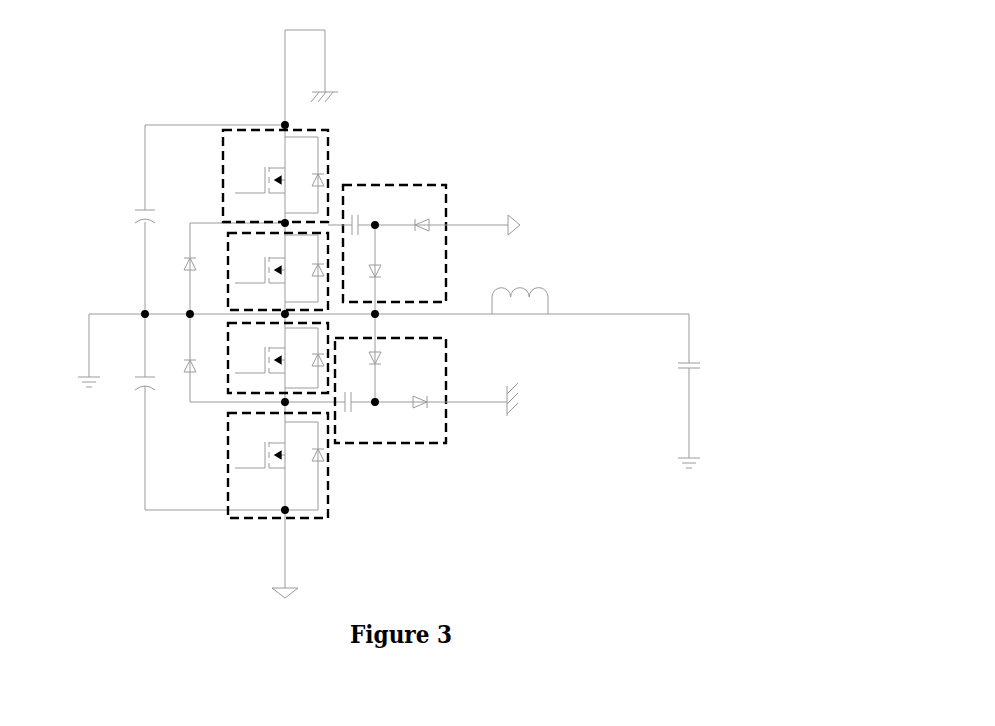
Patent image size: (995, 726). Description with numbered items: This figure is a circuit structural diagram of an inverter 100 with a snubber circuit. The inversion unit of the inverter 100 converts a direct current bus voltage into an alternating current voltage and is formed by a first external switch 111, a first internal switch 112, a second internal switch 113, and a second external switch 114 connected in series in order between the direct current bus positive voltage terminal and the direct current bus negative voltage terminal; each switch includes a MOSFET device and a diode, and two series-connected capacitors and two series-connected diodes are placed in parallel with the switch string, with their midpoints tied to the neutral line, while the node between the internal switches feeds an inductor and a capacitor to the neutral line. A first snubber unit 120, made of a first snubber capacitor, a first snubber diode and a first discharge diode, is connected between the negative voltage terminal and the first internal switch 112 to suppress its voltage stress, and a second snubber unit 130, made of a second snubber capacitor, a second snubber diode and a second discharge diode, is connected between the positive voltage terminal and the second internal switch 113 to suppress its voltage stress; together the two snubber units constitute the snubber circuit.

The inverter 100 is at (696, 57).
The first external switch 111 is at (338, 142).
The first internal switch 112 is at (228, 246).
The second internal switch 113 is at (228, 395).
The second external switch 114 is at (330, 478).
The first snubber unit 120 is at (448, 188).
The second snubber unit 130 is at (448, 440).